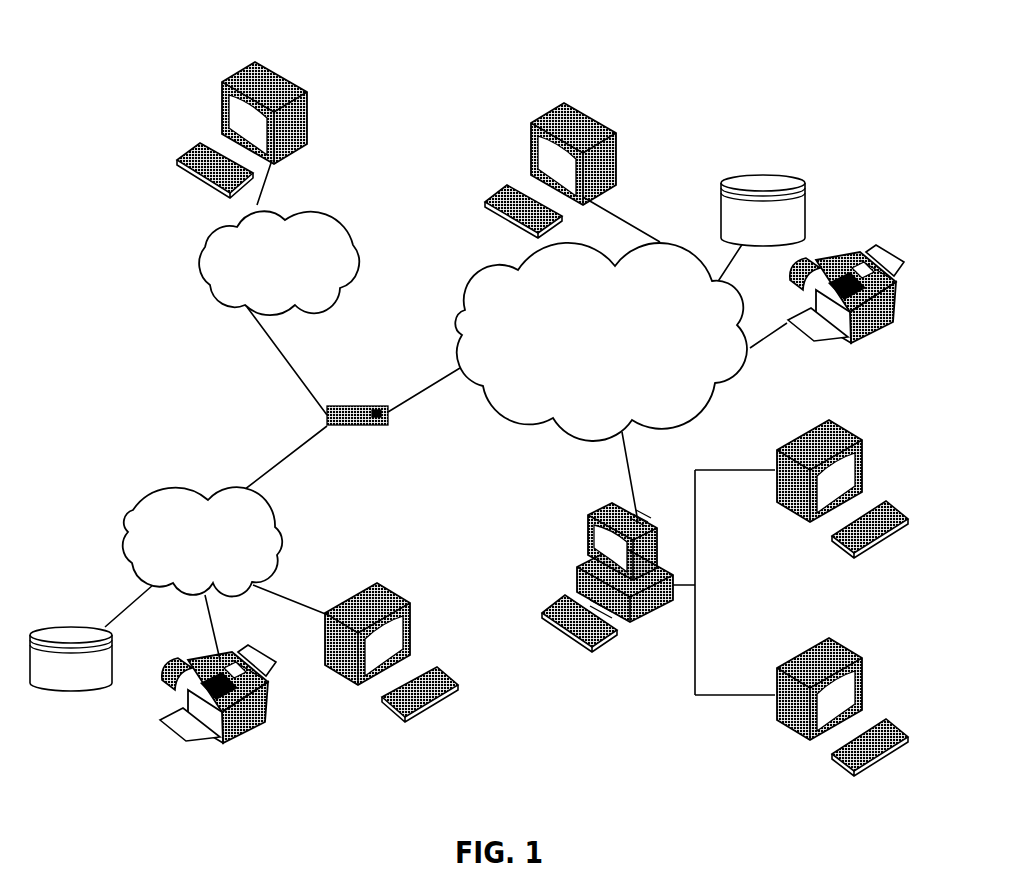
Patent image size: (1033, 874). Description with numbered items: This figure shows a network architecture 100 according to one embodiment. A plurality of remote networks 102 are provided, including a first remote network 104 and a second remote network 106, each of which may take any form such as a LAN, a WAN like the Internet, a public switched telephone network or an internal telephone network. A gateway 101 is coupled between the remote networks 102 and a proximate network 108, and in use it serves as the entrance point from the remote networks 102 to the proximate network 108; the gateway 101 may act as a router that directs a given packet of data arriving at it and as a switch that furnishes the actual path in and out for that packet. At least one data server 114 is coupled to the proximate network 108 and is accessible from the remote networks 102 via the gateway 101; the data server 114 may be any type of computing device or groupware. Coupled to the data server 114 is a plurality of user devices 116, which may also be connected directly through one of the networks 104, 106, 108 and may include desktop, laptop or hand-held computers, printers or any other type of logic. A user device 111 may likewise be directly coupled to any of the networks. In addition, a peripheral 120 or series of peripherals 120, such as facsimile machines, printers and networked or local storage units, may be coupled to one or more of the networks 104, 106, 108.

The architecture 100 is at (152, 46).
The gateway 101 is at (338, 406).
The remote networks 102 is at (182, 325).
The first remote network 104 is at (130, 515).
The second remote network 106 is at (350, 233).
The proximate network 108 is at (708, 406).
The user device 111 is at (617, 137).
The data server 114 is at (588, 536).
The user devices 116 is at (308, 101).
The peripheral 120 is at (73, 693).